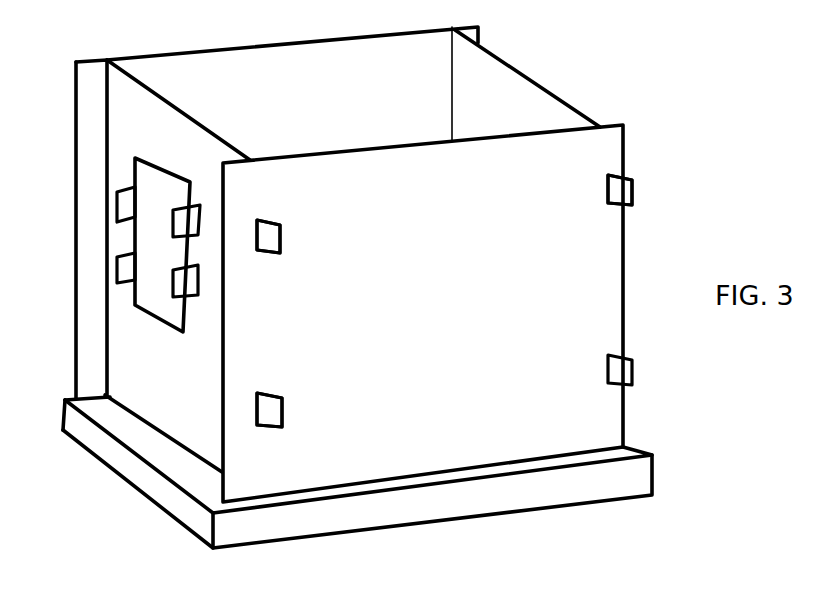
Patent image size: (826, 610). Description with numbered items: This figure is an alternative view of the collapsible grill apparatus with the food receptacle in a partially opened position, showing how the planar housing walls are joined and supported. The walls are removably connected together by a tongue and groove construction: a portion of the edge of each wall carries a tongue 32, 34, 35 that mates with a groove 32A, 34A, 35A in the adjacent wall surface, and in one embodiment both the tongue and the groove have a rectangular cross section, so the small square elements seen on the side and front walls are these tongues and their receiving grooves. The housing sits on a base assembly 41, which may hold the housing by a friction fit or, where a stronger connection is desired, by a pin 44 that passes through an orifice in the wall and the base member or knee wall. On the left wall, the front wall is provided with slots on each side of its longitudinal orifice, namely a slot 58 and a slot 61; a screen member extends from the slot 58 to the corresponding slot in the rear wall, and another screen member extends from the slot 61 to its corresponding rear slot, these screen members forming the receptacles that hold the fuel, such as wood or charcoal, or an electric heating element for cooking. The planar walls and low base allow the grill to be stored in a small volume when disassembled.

The tongue 32 is at (632, 188).
The groove 32A is at (608, 185).
The tongue 34 is at (282, 420).
The groove 34A is at (260, 393).
The tongue 35 is at (282, 252).
The groove 35A is at (260, 218).
The base assembly 41 is at (65, 398).
The pin 44 is at (442, 487).
The slot 58 is at (128, 188).
The slot 61 is at (190, 293).